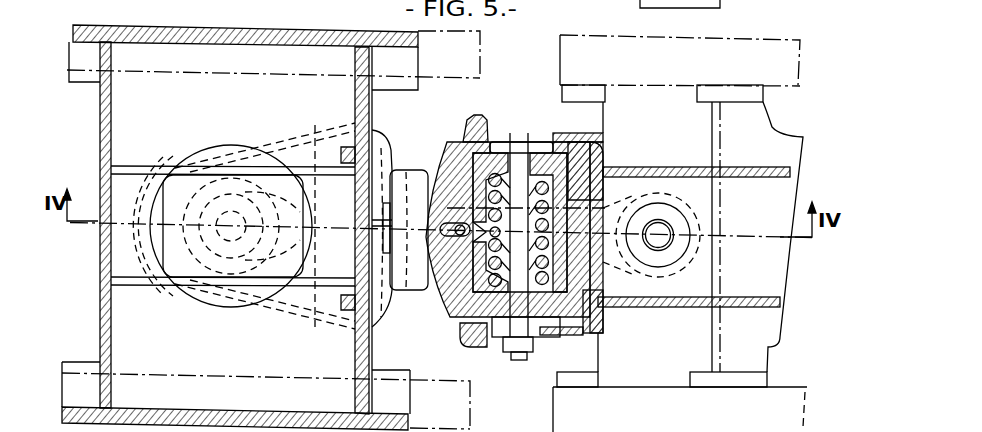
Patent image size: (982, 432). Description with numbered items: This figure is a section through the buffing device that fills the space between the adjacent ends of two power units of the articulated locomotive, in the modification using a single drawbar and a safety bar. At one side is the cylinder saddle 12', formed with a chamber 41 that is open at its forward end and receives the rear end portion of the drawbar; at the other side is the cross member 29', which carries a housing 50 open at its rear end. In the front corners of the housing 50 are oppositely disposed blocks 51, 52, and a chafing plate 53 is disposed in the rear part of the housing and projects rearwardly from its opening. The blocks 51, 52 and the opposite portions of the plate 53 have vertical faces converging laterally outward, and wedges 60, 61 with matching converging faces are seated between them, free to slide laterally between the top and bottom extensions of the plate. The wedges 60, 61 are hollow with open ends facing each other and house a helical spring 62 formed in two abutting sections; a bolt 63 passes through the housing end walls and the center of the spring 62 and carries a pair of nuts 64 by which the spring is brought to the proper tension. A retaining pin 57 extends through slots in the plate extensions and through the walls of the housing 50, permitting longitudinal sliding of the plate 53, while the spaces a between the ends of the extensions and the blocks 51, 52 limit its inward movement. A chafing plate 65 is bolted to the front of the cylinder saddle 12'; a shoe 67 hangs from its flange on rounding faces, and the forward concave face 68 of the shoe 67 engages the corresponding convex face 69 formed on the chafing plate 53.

The cylinder saddle 12' is at (271, 227).
The chamber 41 is at (320, 152).
The chafing plate 65 is at (383, 140).
The shoe 67 is at (396, 287).
The forward concave face 68 is at (422, 170).
The convex face 69 is at (419, 297).
The retaining pin 57 is at (449, 210).
The chafing plate 53 is at (446, 148).
The helical spring 62 is at (598, 283).
The bolt 63 is at (519, 148).
The wedge 60 is at (562, 81).
The wedge 61 is at (497, 336).
The nuts 64 is at (537, 378).
The spaces a is at (557, 337).
The housing 50 is at (576, 135).
The block 51 is at (657, 165).
The block 52 is at (601, 304).
The cross member 29' is at (680, 233).